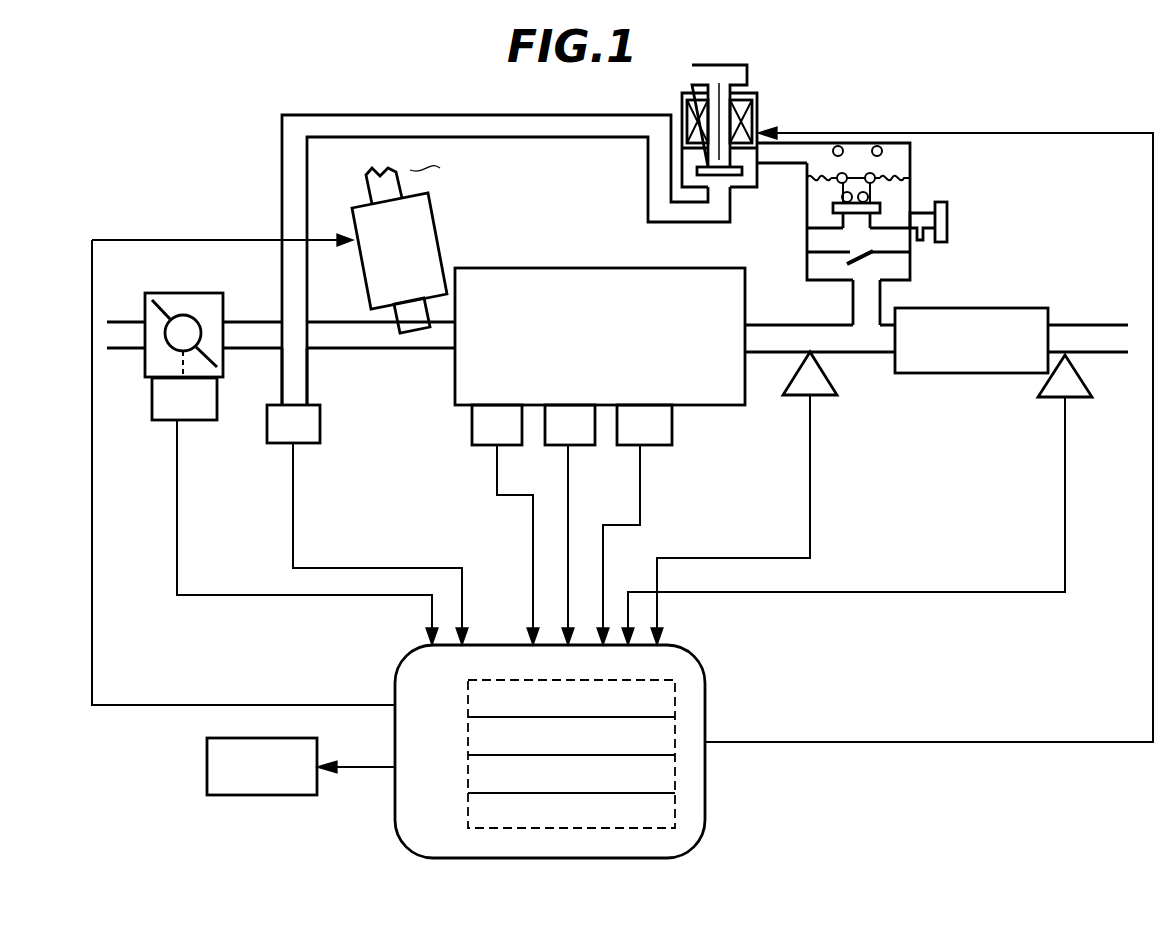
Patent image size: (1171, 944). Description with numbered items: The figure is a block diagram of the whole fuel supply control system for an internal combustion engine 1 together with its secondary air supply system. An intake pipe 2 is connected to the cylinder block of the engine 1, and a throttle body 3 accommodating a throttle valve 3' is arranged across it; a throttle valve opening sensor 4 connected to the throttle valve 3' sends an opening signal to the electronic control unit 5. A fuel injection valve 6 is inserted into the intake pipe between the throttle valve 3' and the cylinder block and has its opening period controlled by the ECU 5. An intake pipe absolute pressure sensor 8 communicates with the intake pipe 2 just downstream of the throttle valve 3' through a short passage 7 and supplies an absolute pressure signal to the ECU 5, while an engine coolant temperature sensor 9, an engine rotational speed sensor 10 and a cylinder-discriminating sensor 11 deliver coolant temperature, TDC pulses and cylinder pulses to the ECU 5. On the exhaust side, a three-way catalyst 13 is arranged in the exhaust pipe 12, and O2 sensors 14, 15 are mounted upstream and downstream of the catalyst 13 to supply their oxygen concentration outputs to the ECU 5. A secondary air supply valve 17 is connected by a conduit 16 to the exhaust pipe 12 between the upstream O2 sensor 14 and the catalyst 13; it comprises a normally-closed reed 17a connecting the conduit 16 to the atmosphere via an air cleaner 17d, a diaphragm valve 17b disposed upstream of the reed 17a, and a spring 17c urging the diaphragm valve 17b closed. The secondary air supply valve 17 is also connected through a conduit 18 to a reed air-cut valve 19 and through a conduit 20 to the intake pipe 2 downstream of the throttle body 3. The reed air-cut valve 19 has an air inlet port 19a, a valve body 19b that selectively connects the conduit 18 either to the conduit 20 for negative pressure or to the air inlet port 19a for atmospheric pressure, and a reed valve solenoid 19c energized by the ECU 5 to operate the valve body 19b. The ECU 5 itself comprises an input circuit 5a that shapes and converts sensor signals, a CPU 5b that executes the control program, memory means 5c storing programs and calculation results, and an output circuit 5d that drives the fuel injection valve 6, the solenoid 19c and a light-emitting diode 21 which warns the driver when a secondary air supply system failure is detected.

The internal combustion engine 1 is at (505, 268).
The intake pipe 2 is at (337, 320).
The throttle body 3 is at (206, 316).
The throttle valve 3' is at (184, 317).
The throttle valve opening sensor 4 is at (217, 407).
The electronic control unit 5 is at (622, 492).
The input circuit 5a is at (676, 685).
The central processing unit 5b is at (676, 724).
The memory means 5c is at (676, 792).
The output circuit 5d is at (676, 826).
The fuel injection valve 6 is at (442, 264).
The pipe to pressure sensor 7 is at (308, 373).
The intake pipe absolute pressure sensor 8 is at (320, 420).
The engine coolant temperature sensor 9 is at (500, 446).
The engine rotational speed sensor 10 is at (570, 446).
The cylinder-discriminating sensor 11 is at (645, 446).
The exhaust pipe 12 is at (762, 353).
The three-way catalyst 13 is at (975, 374).
The upstream O2 sensor 14 is at (835, 396).
The downstream O2 sensor 15 is at (1090, 398).
The conduit 16 is at (880, 300).
The secondary air supply valve 17 is at (928, 188).
The reed 17a is at (845, 263).
The diaphragm valve 17b is at (880, 208).
The spring 17c is at (880, 150).
The air cleaner 17d is at (948, 222).
The conduit 18 is at (778, 167).
The reed air-cut valve 19 is at (743, 117).
The air inlet port 19a is at (745, 65).
The valve body 19b is at (695, 172).
The reed valve solenoid 19c is at (754, 112).
The conduit 20 is at (282, 184).
The light-emitting diode 21 is at (207, 790).